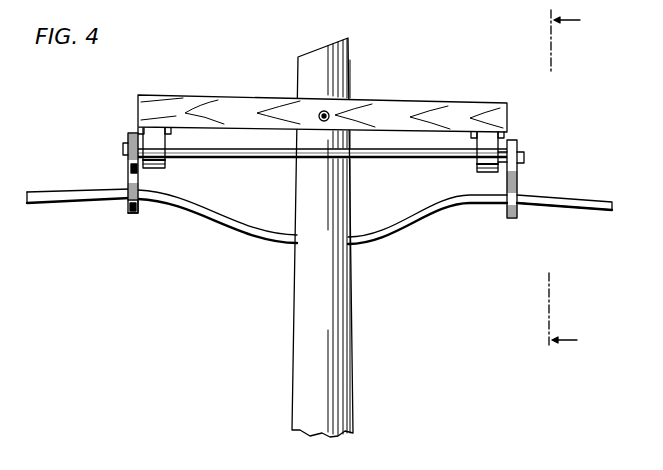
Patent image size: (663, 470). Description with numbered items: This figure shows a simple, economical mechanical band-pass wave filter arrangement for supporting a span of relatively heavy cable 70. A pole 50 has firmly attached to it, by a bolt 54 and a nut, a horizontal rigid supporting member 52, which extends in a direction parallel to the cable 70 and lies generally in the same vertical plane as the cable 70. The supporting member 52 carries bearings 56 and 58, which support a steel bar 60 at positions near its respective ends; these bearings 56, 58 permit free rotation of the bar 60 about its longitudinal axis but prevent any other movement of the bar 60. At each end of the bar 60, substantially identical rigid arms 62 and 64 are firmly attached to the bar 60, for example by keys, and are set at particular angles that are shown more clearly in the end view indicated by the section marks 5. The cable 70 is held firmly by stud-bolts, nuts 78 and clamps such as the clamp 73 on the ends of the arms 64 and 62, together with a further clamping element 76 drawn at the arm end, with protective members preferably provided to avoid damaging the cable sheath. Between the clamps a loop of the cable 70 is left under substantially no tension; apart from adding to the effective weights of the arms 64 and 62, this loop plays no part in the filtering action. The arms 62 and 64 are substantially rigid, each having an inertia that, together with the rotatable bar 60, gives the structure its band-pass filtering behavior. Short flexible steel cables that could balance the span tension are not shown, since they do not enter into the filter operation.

The pole 50 is at (298, 367).
The horizontal rigid supporting member 52 is at (439, 103).
The bolt 54 is at (330, 112).
The bearing 56 is at (165, 168).
The bearing 58 is at (484, 172).
The steel bar 60 is at (247, 158).
The rigid arm 62 is at (511, 218).
The rigid arm 64 is at (125, 159).
The cable 70 is at (82, 203).
The clamp 73 is at (128, 197).
The fastener 76 is at (138, 209).
The nut 78 is at (135, 215).
The section line 5- 5 is at (572, 180).